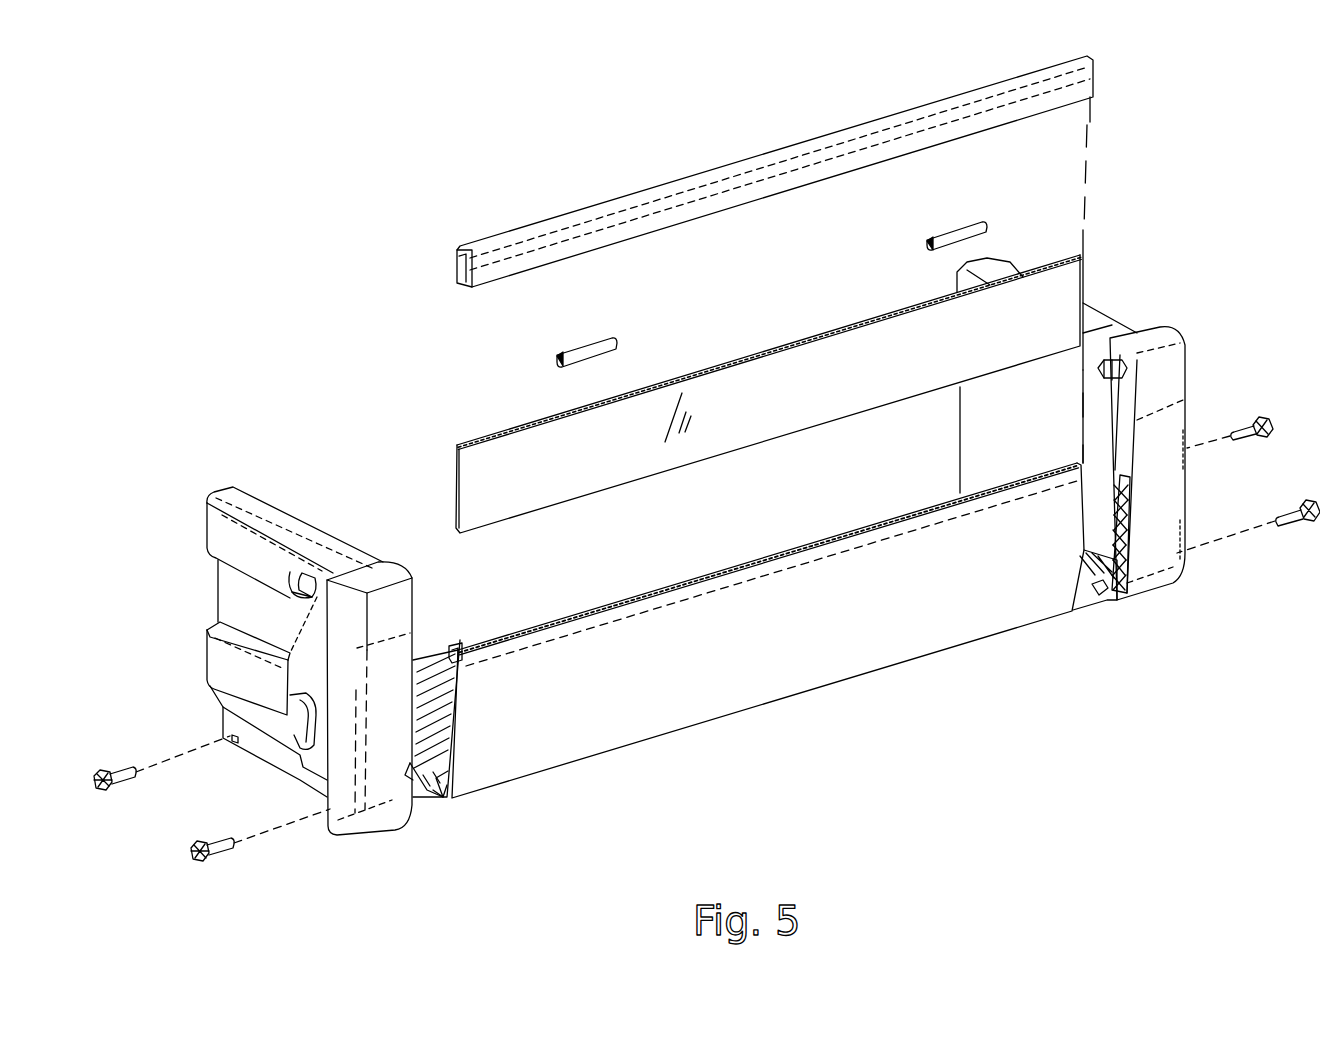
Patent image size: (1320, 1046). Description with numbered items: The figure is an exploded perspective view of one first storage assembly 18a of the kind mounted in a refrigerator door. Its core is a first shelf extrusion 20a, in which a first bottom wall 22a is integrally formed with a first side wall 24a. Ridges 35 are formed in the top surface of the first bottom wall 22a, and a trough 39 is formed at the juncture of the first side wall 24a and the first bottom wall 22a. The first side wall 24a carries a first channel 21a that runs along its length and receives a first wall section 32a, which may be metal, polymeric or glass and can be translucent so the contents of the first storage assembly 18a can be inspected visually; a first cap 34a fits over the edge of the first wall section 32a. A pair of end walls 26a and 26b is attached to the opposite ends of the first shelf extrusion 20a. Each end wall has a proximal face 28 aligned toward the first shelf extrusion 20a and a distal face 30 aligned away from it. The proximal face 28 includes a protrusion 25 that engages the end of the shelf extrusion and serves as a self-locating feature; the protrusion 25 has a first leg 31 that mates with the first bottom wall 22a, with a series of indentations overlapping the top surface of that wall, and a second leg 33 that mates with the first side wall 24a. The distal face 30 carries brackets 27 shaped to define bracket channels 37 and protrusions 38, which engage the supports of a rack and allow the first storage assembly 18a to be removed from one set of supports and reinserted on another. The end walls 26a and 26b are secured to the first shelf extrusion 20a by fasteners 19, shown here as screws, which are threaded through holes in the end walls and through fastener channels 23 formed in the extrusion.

The first storage assembly 18a is at (778, 743).
The fasteners 19 is at (100, 791).
The first shelf extrusion 20a is at (730, 685).
The first channel 21a is at (460, 645).
The first bottom wall 22a is at (412, 738).
The fastener channels 23 is at (427, 788).
The first side wall 24a is at (935, 586).
The protrusion 25 is at (1105, 590).
The end wall 26a is at (271, 675).
The end wall 26b is at (1191, 425).
The brackets 27 is at (287, 717).
The proximal face 28 is at (1095, 352).
The distal face 30 is at (228, 732).
The first leg 31 is at (1092, 570).
The first wall section 32a is at (490, 468).
The second leg 33 is at (1113, 527).
The first cap 34a is at (545, 236).
The ridges 35 is at (410, 767).
The bracket channels 37 is at (235, 580).
The protrusions 38 is at (219, 665).
The trough 39 is at (437, 797).